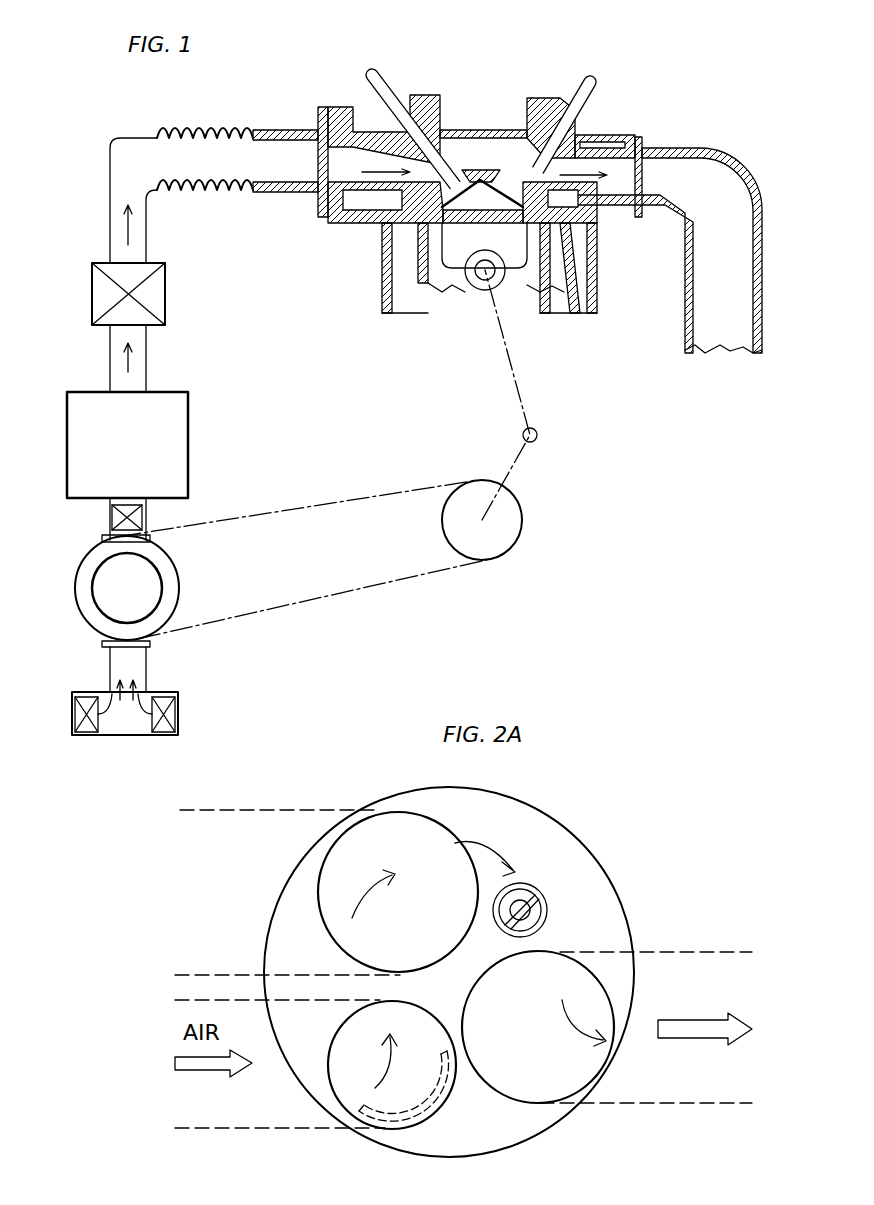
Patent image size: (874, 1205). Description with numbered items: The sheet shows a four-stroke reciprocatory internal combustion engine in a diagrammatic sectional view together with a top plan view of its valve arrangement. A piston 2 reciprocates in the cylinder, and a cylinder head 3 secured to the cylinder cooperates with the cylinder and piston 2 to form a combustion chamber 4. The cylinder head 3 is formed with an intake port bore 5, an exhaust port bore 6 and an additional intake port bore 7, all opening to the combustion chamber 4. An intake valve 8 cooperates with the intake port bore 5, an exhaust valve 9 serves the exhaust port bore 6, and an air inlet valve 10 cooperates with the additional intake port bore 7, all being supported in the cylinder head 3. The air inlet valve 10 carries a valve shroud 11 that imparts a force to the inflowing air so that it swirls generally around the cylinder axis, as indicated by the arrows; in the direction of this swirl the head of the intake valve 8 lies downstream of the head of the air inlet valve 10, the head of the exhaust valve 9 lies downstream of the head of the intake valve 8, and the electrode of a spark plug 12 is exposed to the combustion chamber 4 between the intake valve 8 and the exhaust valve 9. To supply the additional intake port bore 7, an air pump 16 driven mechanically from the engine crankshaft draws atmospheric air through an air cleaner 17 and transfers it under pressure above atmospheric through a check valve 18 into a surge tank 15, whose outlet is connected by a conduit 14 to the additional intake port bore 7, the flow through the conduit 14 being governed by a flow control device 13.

In FIG. 1, the piston 2 is at (447, 272).
In FIG. 1, the cylinder head 3 is at (500, 130).
In FIG. 1, the combustion chamber 4 is at (482, 190).
In FIG. 2A, the combustion chamber 4 is at (531, 1121).
In FIG. 2A, the intake port bore 5 is at (261, 822).
In FIG. 1, the exhaust port bore 6 is at (606, 167).
In FIG. 2A, the exhaust port bore 6 is at (697, 1070).
In FIG. 1, the additional intake port bore 7 is at (368, 150).
In FIG. 2A, the additional intake port bore 7 is at (250, 1100).
In FIG. 2A, the intake valve 8 is at (398, 830).
In FIG. 1, the exhaust valve 9 is at (580, 88).
In FIG. 2A, the exhaust valve 9 is at (575, 982).
In FIG. 1, the air inlet valve 10 is at (388, 93).
In FIG. 2A, the air inlet valve 10 is at (352, 1097).
In FIG. 2A, the valve shroud 11 is at (440, 1108).
In FIG. 2A, the spark plug 12 is at (537, 900).
In FIG. 1, the flow control device 13 is at (165, 305).
In FIG. 1, the conduit 14 is at (203, 170).
In FIG. 1, the surge tank 15 is at (188, 438).
In FIG. 1, the air pump 16 is at (150, 585).
In FIG. 1, the air cleaner 17 is at (125, 735).
In FIG. 1, the check valve 18 is at (142, 518).